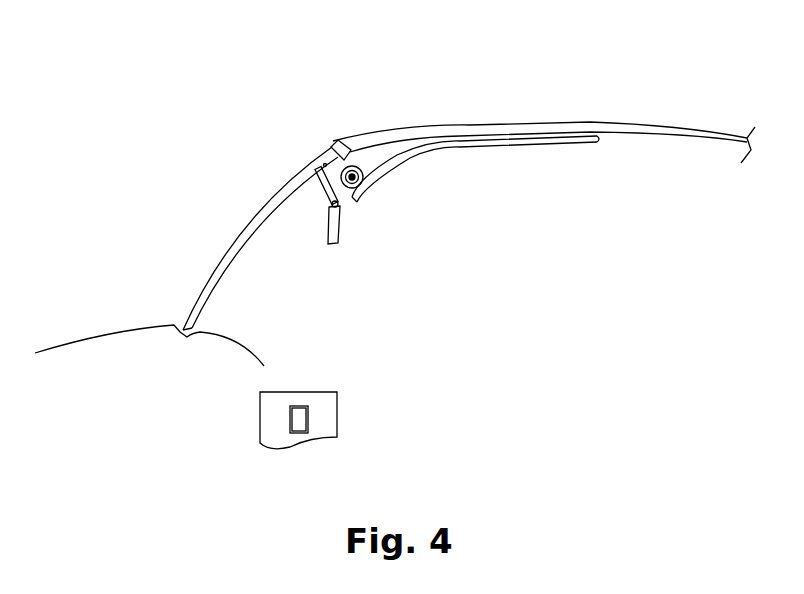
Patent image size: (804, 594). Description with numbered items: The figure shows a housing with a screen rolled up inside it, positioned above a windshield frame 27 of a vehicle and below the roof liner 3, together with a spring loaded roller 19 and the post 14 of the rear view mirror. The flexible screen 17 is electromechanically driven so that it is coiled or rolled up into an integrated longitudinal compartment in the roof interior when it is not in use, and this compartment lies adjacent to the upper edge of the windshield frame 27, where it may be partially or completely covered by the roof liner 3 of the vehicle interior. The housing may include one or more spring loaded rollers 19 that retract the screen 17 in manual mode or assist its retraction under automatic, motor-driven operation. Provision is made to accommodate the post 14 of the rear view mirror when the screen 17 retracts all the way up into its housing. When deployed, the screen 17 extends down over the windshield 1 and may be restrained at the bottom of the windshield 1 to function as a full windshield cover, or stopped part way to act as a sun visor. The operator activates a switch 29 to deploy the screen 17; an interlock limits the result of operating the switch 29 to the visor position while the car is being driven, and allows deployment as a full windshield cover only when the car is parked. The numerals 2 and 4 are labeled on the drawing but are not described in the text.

The windshield 1 is at (225, 247).
The vehicle body 2 is at (265, 353).
The roof liner 3 is at (380, 193).
The roof part 4 is at (512, 117).
The post 14 is at (320, 195).
The flexible screen 17 is at (325, 165).
The spring loaded roller 19 is at (370, 168).
The windshield frame 27 is at (343, 150).
The switch 29 is at (340, 415).